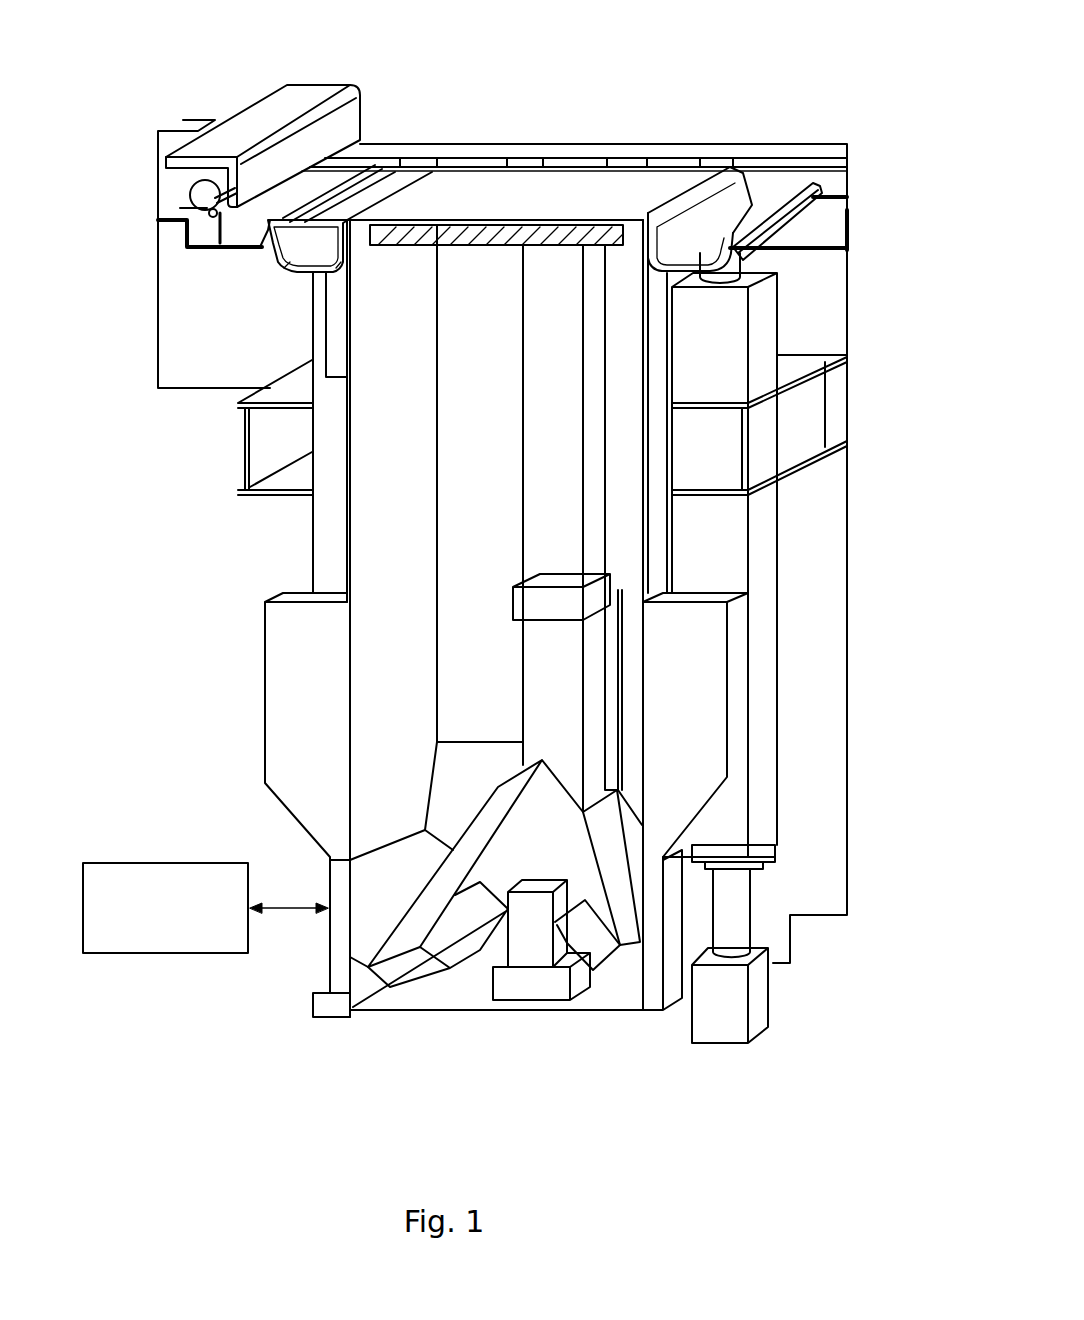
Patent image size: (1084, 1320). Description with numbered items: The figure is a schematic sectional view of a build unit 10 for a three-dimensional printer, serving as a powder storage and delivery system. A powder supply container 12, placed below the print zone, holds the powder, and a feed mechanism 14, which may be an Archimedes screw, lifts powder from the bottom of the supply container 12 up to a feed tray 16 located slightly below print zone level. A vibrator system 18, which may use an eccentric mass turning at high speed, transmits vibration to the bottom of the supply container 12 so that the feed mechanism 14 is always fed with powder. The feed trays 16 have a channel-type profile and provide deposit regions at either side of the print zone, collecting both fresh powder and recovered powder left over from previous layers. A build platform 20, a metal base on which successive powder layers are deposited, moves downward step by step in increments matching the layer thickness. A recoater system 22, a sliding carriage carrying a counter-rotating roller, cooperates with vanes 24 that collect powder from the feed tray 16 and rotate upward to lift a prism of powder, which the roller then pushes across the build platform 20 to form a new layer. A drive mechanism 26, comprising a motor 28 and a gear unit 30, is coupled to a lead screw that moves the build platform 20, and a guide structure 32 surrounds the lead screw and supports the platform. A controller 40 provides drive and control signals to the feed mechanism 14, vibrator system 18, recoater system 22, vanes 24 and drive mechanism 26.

The build unit 10 is at (833, 74).
The powder supply container 12 is at (457, 492).
The feed mechanism 14 is at (735, 533).
The feed tray 16 is at (303, 242).
The vibrator system 18 is at (622, 915).
The build platform 20 is at (562, 183).
The recoater system 22 is at (303, 98).
The vanes 24 is at (410, 175).
The drive mechanism 26 is at (545, 953).
The motor 28 is at (533, 943).
The gear unit 30 is at (533, 997).
The guide structure 32 is at (593, 678).
The controller 40 is at (140, 877).